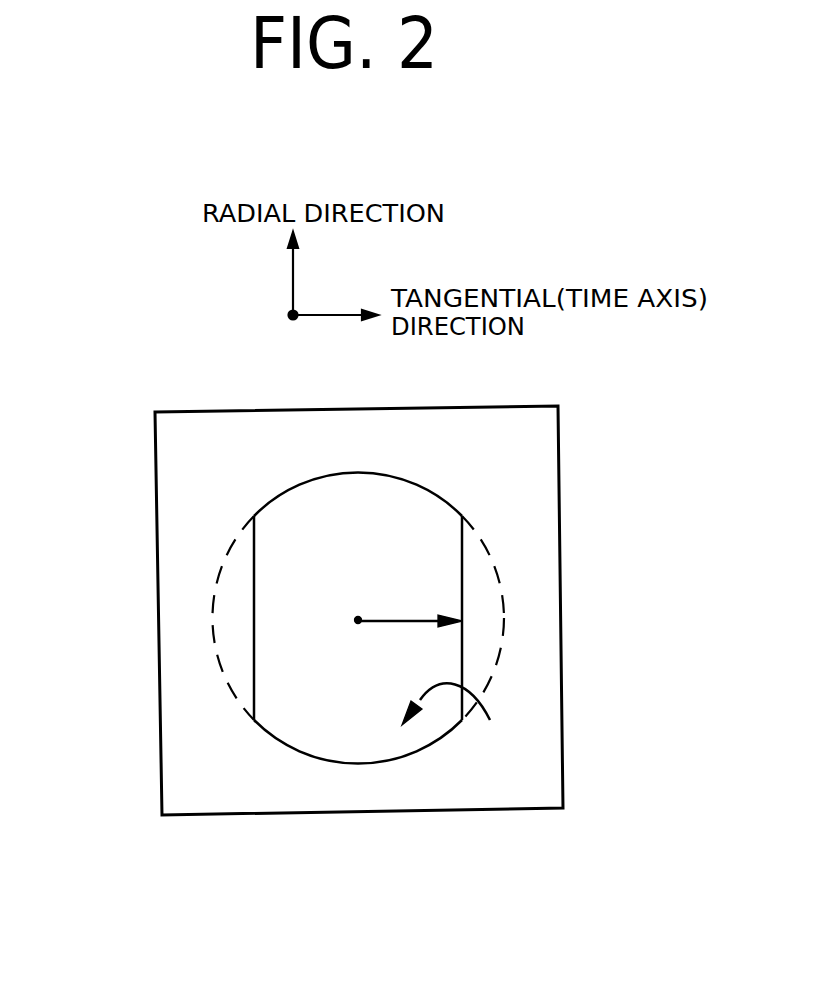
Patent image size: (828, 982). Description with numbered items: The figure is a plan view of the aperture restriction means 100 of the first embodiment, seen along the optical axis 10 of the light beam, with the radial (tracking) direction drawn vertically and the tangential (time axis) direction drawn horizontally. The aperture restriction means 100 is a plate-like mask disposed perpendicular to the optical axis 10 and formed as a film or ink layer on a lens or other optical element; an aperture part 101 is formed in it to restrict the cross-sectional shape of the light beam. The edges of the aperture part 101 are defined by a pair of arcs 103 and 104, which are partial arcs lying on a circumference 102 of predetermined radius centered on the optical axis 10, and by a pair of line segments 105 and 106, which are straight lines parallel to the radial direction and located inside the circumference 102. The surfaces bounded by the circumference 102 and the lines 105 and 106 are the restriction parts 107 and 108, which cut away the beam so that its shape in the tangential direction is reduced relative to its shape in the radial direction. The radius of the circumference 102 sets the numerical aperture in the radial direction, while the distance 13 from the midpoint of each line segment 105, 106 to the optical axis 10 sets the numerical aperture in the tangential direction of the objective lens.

The aperture restriction means 100 is at (560, 443).
The aperture part 101 is at (490, 720).
The circumference 102 is at (505, 637).
The arc 103 is at (325, 478).
The arc 104 is at (328, 755).
The line segment 105 is at (462, 657).
The line segment 106 is at (255, 622).
The restriction part 107 is at (490, 580).
The restriction part 108 is at (228, 617).
The optical axis 10 is at (362, 598).
The distance 13 is at (420, 618).